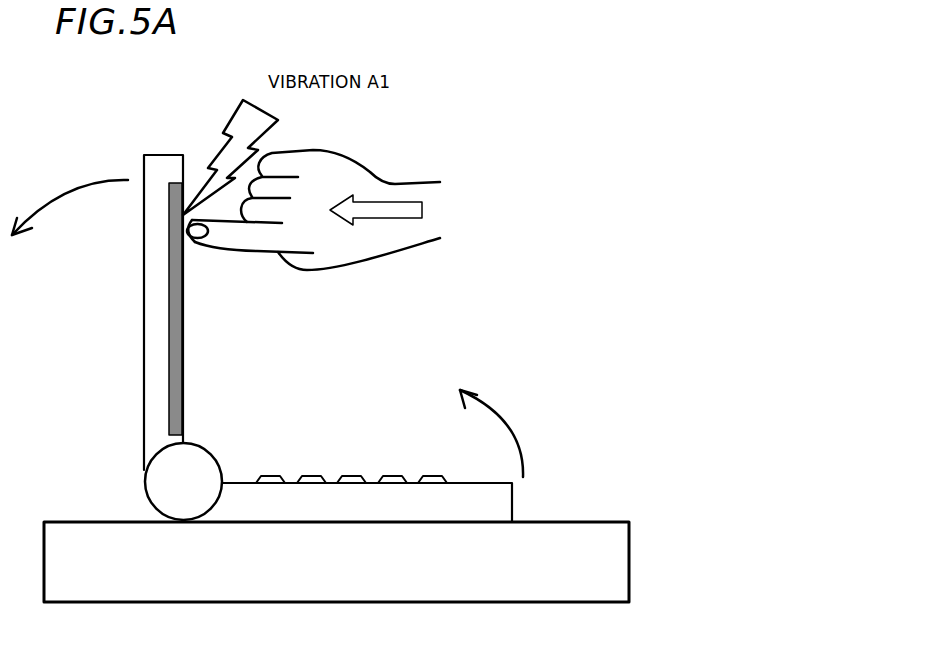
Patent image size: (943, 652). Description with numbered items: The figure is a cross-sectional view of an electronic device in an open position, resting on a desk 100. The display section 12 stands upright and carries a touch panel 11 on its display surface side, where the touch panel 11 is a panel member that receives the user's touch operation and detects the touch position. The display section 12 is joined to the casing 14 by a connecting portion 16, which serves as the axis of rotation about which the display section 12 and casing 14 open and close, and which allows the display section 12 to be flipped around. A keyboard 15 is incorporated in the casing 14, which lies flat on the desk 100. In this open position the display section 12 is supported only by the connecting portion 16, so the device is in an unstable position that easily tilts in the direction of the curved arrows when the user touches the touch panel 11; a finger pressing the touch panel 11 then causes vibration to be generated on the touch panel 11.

The touch panel 11 is at (175, 370).
The display section 12 is at (161, 170).
The casing 14 is at (342, 503).
The keyboard 15 is at (313, 476).
The connecting portion 16 is at (182, 488).
The desk 100 is at (617, 562).